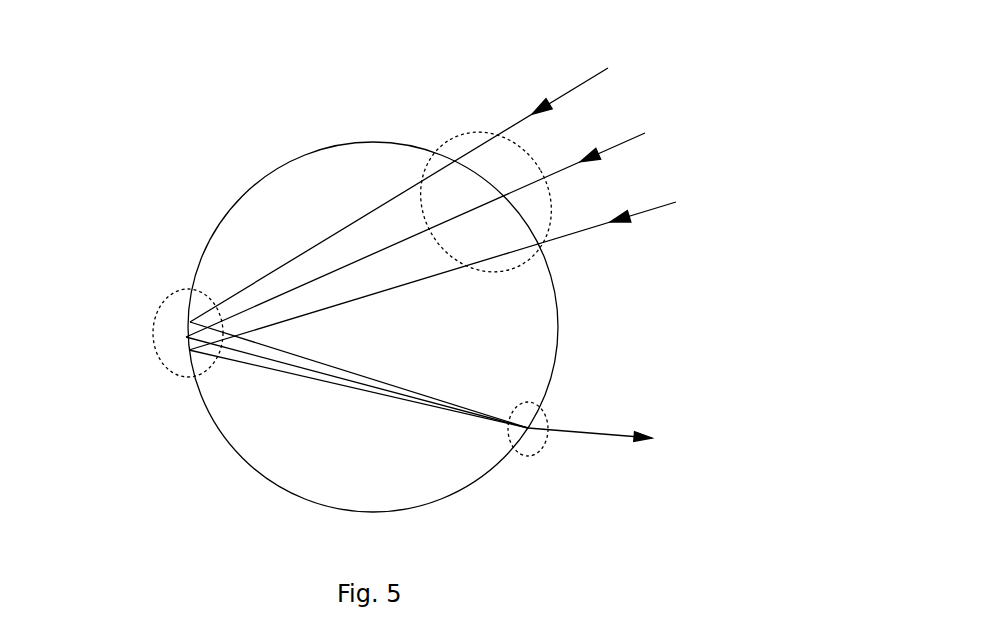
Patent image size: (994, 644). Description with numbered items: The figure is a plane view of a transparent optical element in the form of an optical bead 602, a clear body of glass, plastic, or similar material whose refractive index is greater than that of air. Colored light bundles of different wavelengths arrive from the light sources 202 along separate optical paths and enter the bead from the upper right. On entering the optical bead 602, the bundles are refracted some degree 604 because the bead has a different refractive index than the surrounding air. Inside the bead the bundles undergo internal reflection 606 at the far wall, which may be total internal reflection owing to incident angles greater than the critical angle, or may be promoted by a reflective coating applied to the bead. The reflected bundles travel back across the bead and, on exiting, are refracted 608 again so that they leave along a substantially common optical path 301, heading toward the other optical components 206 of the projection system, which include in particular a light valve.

The optical bead 602 is at (263, 172).
The refraction upon entering 604 is at (458, 133).
The internal reflection 606 is at (167, 292).
The refraction upon exiting 608 is at (548, 418).
The common optical path 301 is at (615, 442).
The light sources 202 is at (498, 208).
The other optical components 206 is at (679, 459).